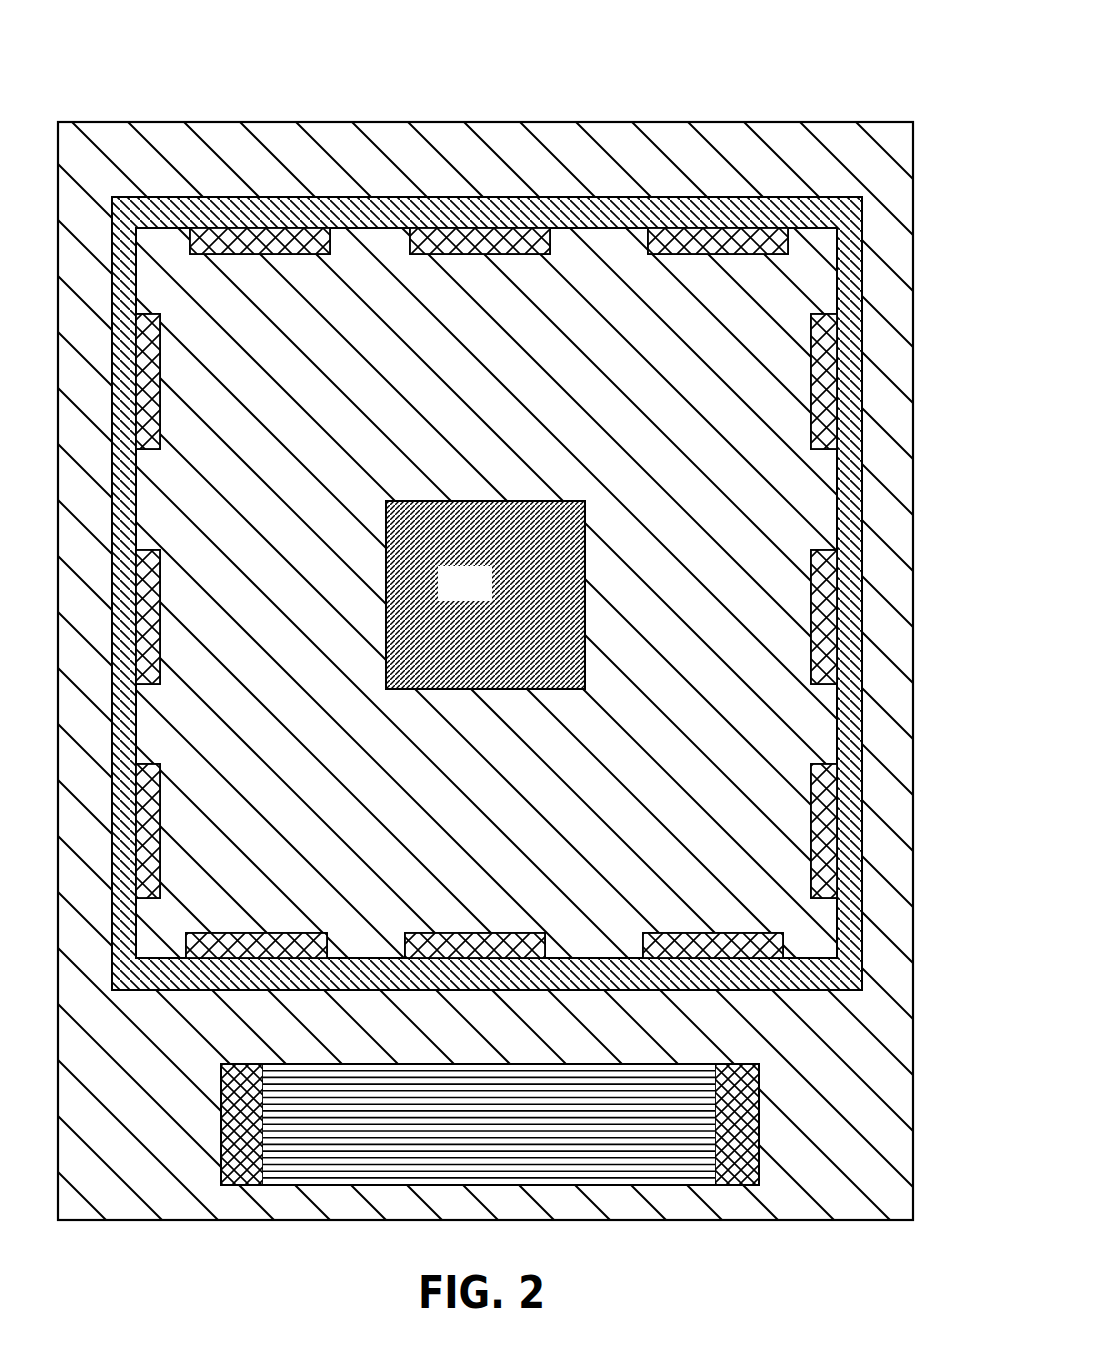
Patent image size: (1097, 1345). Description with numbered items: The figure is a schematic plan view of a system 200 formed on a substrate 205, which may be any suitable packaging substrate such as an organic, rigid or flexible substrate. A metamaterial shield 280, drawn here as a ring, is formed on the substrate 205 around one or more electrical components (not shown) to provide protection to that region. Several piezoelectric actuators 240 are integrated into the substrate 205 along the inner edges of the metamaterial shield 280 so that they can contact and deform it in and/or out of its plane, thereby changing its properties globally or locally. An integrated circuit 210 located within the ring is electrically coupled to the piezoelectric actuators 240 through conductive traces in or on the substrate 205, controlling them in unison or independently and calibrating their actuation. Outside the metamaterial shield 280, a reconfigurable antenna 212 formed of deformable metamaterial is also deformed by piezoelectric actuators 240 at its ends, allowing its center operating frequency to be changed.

The system 200 is at (505, 650).
The substrate 205 is at (898, 1181).
The integrated circuit 210 is at (486, 598).
The reconfigurable antenna 212 is at (633, 1160).
The piezoelectric actuators 240 is at (166, 396).
The metamaterial shield 280 is at (366, 212).